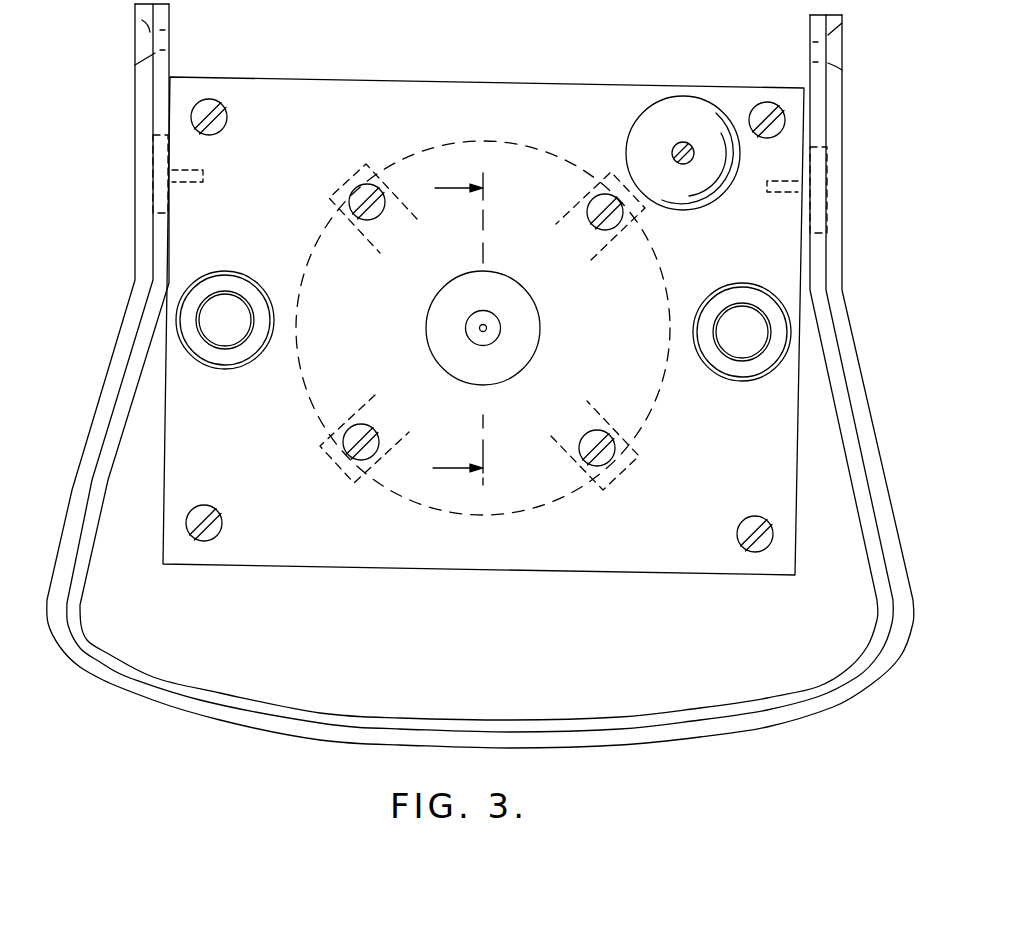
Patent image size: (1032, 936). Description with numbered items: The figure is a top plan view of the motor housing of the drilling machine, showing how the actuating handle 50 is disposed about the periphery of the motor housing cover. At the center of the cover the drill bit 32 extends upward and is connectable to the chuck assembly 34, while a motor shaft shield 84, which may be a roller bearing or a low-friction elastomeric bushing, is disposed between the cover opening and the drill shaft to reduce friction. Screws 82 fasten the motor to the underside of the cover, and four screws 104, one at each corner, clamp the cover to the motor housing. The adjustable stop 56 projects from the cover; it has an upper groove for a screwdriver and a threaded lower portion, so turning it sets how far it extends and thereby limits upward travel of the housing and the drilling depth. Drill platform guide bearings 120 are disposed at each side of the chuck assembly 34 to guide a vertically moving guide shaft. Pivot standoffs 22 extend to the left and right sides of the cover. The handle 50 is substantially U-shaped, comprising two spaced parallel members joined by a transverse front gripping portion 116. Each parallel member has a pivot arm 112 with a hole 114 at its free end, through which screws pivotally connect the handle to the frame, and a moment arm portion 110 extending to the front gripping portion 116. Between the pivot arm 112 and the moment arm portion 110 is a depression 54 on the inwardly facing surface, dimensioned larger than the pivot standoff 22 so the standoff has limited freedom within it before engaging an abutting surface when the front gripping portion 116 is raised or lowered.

The pivot standoffs 22 is at (157, 172).
The drill bit 32 is at (486, 325).
The chuck assembly 34 is at (489, 338).
The handle 50 is at (237, 715).
The depression 54 is at (153, 144).
The adjustable stop 56 is at (666, 132).
The screws 82 is at (357, 195).
The motor shaft shield 84 is at (440, 340).
The screws 104 is at (222, 118).
The moment arm portion 110 is at (95, 442).
The pivot arm 112 is at (145, 113).
The hole 114 is at (155, 42).
The front gripping portion 116 is at (753, 718).
The drill platform guide bearings 120 is at (240, 358).